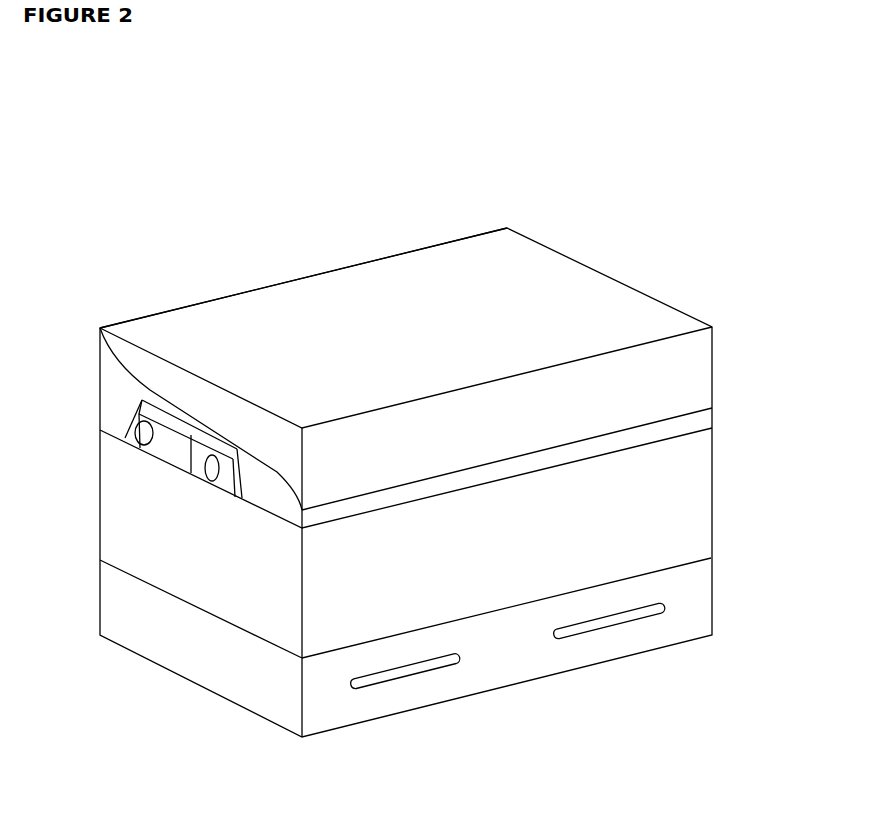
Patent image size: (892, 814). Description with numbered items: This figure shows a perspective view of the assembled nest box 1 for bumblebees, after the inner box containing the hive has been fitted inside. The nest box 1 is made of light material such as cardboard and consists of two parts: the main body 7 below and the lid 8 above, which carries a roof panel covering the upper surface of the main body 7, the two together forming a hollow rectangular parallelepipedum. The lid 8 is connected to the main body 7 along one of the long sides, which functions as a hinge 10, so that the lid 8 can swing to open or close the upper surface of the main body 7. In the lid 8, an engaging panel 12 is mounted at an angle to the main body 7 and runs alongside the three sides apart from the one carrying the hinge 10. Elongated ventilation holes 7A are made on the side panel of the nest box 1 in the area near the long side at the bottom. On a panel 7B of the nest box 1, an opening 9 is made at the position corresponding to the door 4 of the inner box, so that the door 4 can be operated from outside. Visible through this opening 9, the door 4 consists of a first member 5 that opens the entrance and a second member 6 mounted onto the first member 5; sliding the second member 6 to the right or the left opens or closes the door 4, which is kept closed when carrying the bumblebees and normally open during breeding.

The nest box 1 is at (522, 220).
The hinge 10 is at (247, 292).
The lid 8 is at (563, 303).
The engaging panel 12 is at (672, 380).
The main body 7 is at (630, 503).
The panel 7B is at (208, 575).
The elongated ventilation holes 7A is at (452, 663).
The second member 6 is at (157, 448).
The opening 9 is at (143, 453).
The door 4 is at (190, 473).
The first member 5 is at (232, 479).